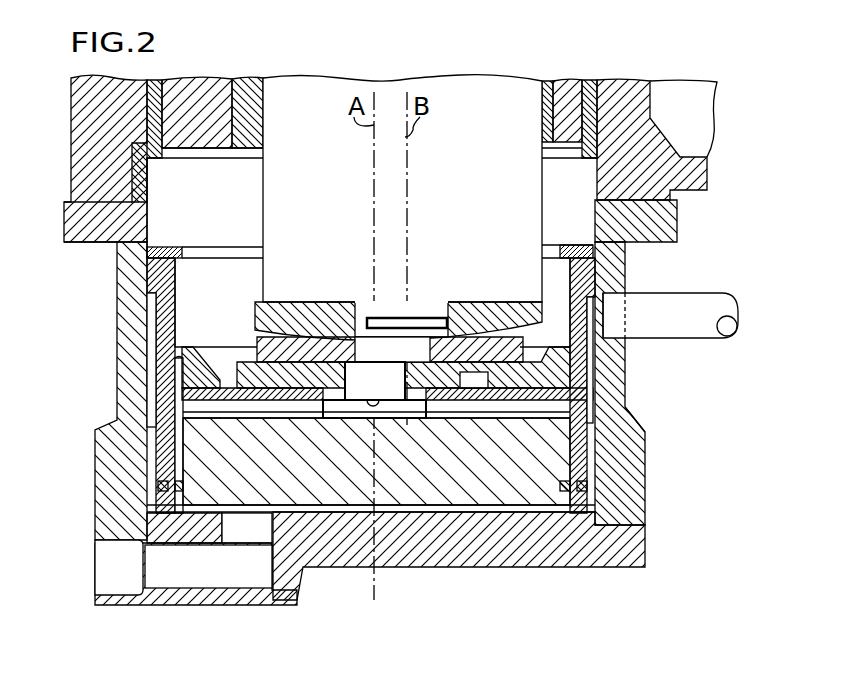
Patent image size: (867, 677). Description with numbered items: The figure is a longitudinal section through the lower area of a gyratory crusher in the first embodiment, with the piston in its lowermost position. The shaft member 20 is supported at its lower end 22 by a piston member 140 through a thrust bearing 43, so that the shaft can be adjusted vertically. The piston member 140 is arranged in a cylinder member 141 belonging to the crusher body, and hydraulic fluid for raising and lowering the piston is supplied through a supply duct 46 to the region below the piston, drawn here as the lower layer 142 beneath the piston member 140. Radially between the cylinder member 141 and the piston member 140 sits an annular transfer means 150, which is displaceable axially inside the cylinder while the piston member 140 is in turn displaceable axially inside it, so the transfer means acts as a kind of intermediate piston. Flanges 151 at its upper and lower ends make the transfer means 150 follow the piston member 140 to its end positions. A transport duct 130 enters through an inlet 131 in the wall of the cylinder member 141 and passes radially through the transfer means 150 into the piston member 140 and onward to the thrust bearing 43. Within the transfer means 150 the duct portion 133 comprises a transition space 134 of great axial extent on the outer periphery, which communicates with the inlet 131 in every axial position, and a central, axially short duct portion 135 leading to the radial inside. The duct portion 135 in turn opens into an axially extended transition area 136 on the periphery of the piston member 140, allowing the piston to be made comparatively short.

The shaft member 20 is at (469, 165).
The lower end 22 is at (295, 277).
The thrust bearing 43 is at (262, 333).
The supply duct 46 is at (247, 568).
The transport duct 130 is at (681, 307).
The inlet 131 is at (605, 310).
The duct portion 133 is at (589, 383).
The transition space 134 is at (590, 350).
The duct portion 135 is at (160, 365).
The transition area 136 is at (626, 406).
The piston member 140 is at (475, 483).
The cylinder member 141 is at (113, 471).
The lower base layer 142 is at (340, 512).
The transfer means 150 is at (600, 452).
The flanges 151 is at (175, 247).